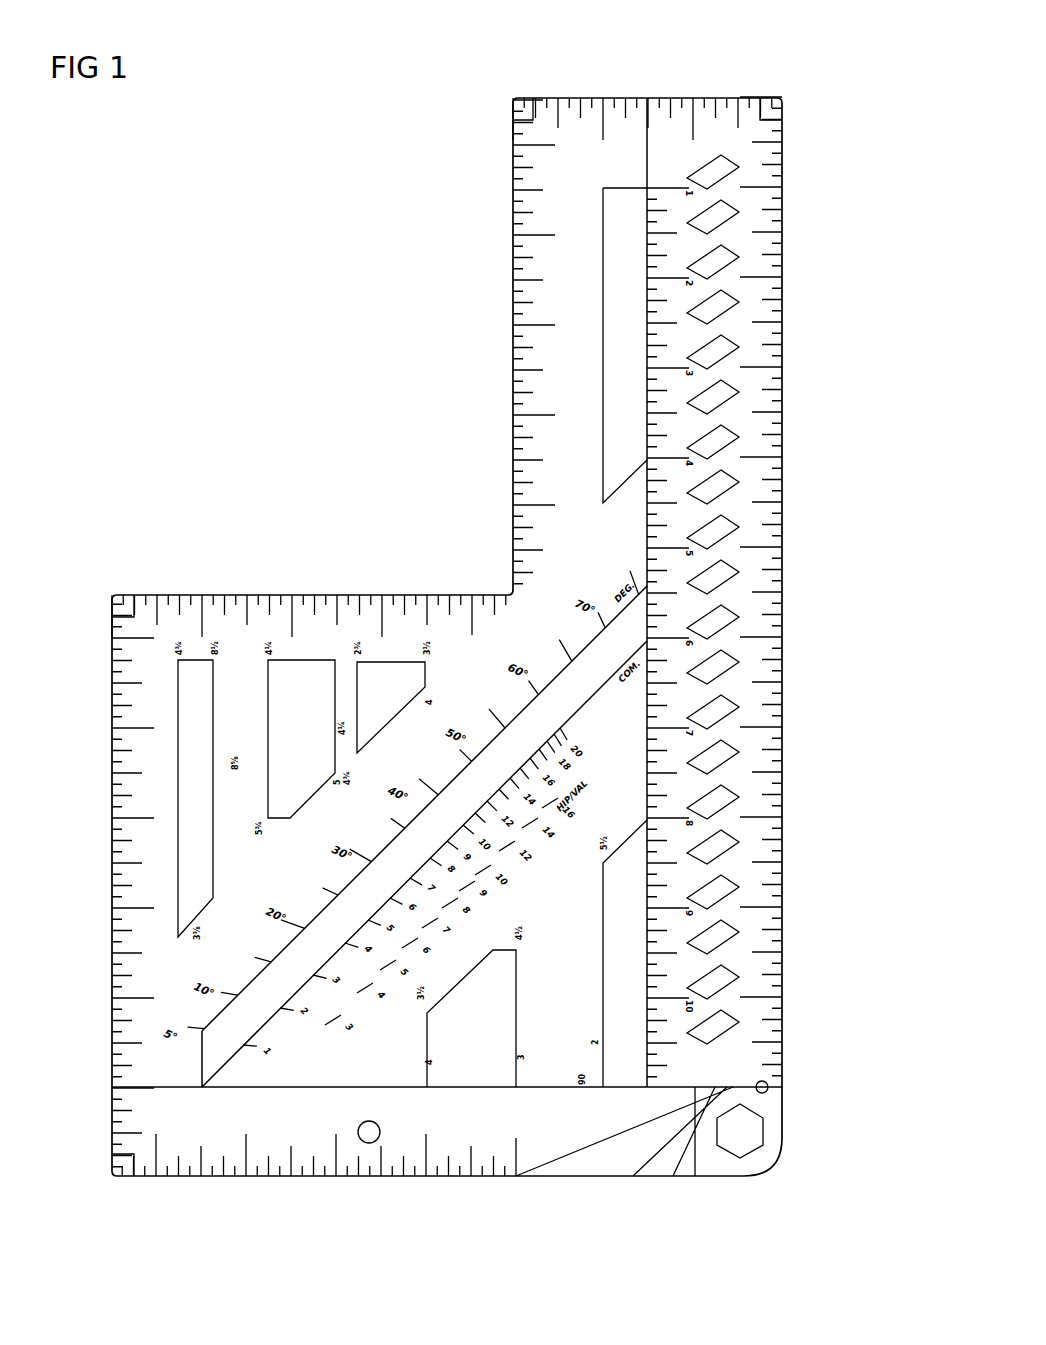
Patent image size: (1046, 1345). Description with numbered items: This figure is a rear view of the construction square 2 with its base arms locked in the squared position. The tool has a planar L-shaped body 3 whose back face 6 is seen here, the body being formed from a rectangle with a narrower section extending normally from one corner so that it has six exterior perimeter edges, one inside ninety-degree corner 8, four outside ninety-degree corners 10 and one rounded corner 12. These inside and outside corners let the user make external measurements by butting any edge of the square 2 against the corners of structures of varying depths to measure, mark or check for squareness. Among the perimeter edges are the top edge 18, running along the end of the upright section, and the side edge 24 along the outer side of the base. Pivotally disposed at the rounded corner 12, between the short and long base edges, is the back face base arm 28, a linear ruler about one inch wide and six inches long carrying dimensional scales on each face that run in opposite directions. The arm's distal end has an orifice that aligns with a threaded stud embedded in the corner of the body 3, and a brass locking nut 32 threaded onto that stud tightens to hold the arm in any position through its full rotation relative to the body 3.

The construction square 2 is at (225, 313).
The L-shaped body 3 is at (332, 597).
The back face 6 is at (578, 290).
The inside 90-degree corner 8 is at (517, 587).
The outside 90-degree corner 10 is at (785, 98).
The rounded corner 12 is at (780, 1163).
The top edge 18 is at (640, 98).
The side edge 24 is at (112, 823).
The back face base arm 28 is at (535, 1125).
The locking nut 32 is at (752, 1134).